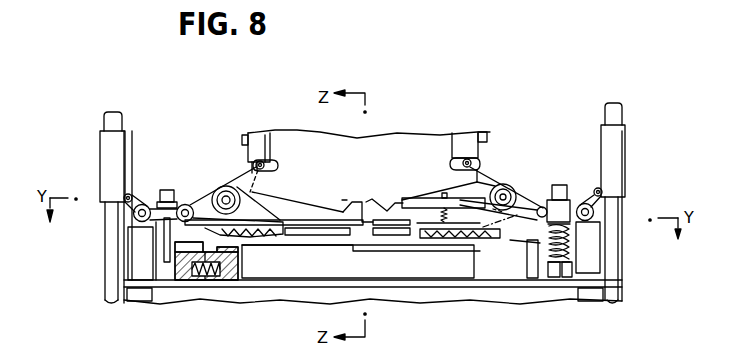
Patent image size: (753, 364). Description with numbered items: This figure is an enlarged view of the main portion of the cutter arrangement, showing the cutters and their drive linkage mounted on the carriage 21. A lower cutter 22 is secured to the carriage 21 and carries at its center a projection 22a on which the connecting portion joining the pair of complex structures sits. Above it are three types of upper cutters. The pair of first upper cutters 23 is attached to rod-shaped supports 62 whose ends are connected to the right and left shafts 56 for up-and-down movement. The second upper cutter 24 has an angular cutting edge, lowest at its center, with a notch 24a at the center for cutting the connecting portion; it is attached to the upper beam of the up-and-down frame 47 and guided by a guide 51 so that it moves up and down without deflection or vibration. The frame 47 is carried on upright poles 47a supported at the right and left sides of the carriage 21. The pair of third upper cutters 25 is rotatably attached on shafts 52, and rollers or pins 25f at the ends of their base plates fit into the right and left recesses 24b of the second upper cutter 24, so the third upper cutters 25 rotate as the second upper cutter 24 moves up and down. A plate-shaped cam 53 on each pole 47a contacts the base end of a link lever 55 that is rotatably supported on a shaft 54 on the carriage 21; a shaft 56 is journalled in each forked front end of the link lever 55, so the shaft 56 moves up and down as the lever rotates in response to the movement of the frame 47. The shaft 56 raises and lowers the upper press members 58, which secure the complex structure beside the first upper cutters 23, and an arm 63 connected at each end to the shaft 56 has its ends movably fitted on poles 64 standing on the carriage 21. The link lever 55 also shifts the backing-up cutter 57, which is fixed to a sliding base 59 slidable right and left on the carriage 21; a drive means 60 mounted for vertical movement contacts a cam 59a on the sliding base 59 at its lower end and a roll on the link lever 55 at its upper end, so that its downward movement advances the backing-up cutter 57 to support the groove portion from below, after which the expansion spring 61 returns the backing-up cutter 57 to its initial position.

The carriage 21 is at (582, 292).
The lower cutter 22 is at (320, 280).
The projection 22a is at (362, 246).
The first upper cutters 23 is at (292, 238).
The second upper cutter 24 is at (296, 135).
The notch 24a is at (367, 198).
The recesses 24b is at (268, 160).
The third upper cutters 25 is at (242, 200).
The rollers or pins 25f is at (497, 138).
The up-and-down frame 47 is at (104, 255).
The poles 47a is at (126, 291).
The guide 51 is at (485, 127).
The shafts 52 is at (224, 186).
The plate-shaped cam 53 is at (127, 127).
The shaft 54 is at (133, 216).
The link lever 55 is at (130, 193).
The shaft 56 is at (186, 204).
The backing-up cutter 57 is at (527, 226).
The upper press members 58 is at (438, 240).
The sliding base 59 is at (538, 270).
The cam 59a is at (188, 268).
The drive means 60 is at (163, 262).
The expansion spring 61 is at (245, 268).
The supports 62 is at (312, 207).
The arm 63 is at (410, 197).
The poles 64 is at (166, 189).